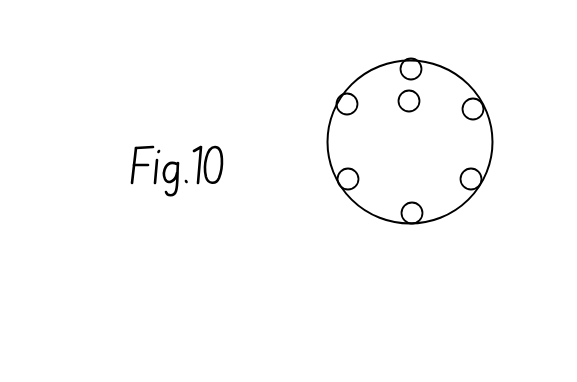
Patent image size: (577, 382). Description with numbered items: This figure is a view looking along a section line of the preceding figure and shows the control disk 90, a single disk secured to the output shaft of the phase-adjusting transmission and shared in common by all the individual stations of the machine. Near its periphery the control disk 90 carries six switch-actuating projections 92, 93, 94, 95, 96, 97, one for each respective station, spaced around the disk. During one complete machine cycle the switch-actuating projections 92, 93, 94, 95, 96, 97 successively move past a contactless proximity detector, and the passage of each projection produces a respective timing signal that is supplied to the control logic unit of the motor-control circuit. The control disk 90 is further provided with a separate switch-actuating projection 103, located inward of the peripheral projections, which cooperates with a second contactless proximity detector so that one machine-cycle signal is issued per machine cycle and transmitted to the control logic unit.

The control disk 90 is at (494, 142).
The switch-actuating projection 92 is at (411, 69).
The switch-actuating projection 93 is at (473, 109).
The switch-actuating projection 94 is at (478, 186).
The switch-actuating projection 95 is at (412, 213).
The switch-actuating projection 96 is at (348, 180).
The switch-actuating projection 97 is at (347, 103).
The switch-actuating projection 103 is at (409, 101).